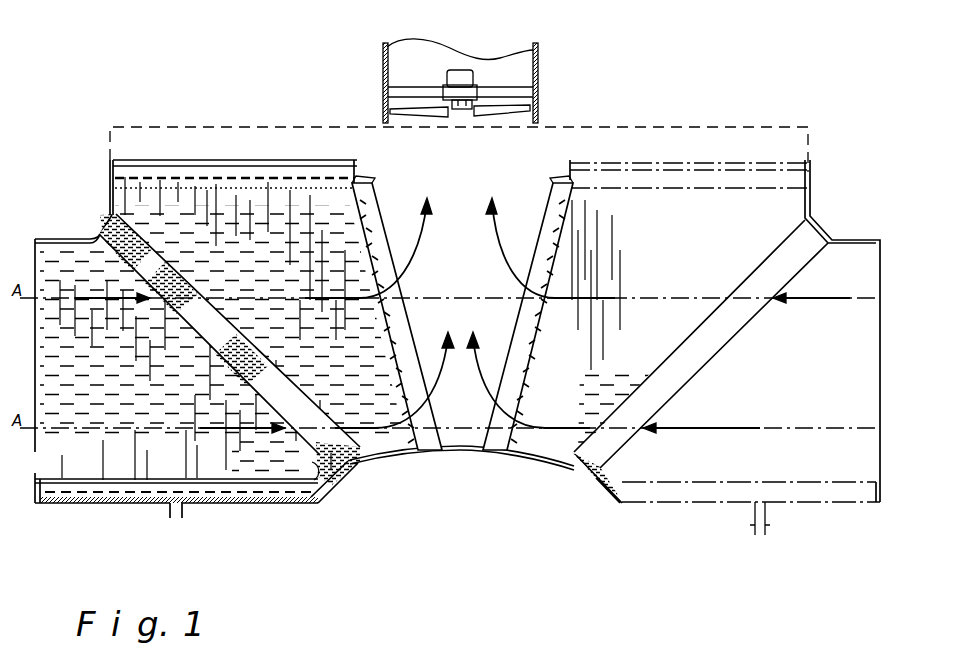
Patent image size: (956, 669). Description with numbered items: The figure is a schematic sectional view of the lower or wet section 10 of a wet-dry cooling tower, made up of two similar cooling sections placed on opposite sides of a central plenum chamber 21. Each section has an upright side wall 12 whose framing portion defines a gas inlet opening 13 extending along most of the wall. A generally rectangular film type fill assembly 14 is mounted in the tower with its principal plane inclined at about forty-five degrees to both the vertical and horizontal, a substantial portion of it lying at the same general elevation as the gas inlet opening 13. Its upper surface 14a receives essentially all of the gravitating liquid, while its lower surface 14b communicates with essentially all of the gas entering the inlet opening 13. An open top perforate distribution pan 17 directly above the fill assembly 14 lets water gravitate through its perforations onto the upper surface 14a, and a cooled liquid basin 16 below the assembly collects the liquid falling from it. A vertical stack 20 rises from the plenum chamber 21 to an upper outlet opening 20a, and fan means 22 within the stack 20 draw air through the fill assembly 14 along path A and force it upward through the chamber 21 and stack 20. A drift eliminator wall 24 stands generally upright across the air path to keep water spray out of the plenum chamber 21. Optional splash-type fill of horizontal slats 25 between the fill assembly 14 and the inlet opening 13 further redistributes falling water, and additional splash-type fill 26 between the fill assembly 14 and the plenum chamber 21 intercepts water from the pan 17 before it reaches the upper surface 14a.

The wet section of the cooling tower 10 is at (160, 128).
The upright side wall 12 is at (34, 454).
The gas inlet opening 13 is at (37, 378).
The film type fill assembly 14 is at (102, 212).
The upper surface 14a is at (355, 450).
The lower surface 14b is at (323, 496).
The cooled liquid basin 16 is at (145, 490).
The perforate distribution pan 17 is at (198, 176).
The vertical stack 20 is at (527, 78).
The upper outlet opening 20a is at (431, 56).
The central plenum chamber 21 is at (470, 249).
The fan means 22 is at (518, 106).
The drift eliminator wall 24 is at (407, 323).
The horizontal slats 25 is at (150, 360).
The splash-type fill 26 is at (242, 272).